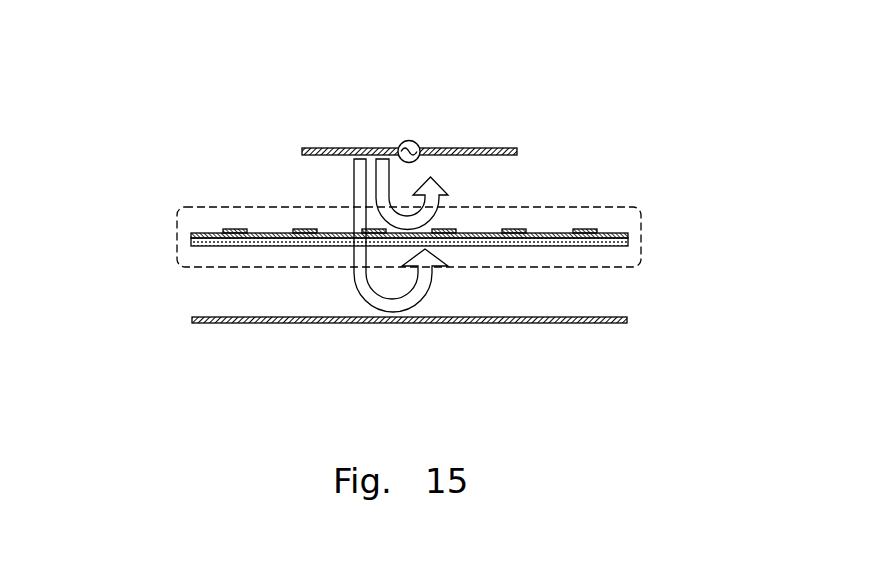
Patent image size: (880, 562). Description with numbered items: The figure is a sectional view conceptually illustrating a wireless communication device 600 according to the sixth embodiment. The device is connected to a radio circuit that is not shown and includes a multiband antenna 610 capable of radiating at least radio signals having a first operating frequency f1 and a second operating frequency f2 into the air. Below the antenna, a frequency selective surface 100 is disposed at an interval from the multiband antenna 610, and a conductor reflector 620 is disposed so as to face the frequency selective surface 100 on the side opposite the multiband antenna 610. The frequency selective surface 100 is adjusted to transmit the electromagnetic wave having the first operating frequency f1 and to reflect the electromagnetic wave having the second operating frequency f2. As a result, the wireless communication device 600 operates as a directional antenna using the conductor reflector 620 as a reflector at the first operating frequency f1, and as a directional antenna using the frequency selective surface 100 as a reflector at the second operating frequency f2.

The wireless communication device 600 is at (95, 102).
The multiband antenna 610 is at (337, 151).
The frequency selective surface 100 is at (641, 228).
The conductor reflector 620 is at (322, 324).
The first operating frequency f1 is at (408, 235).
The second operating frequency f2 is at (423, 194).